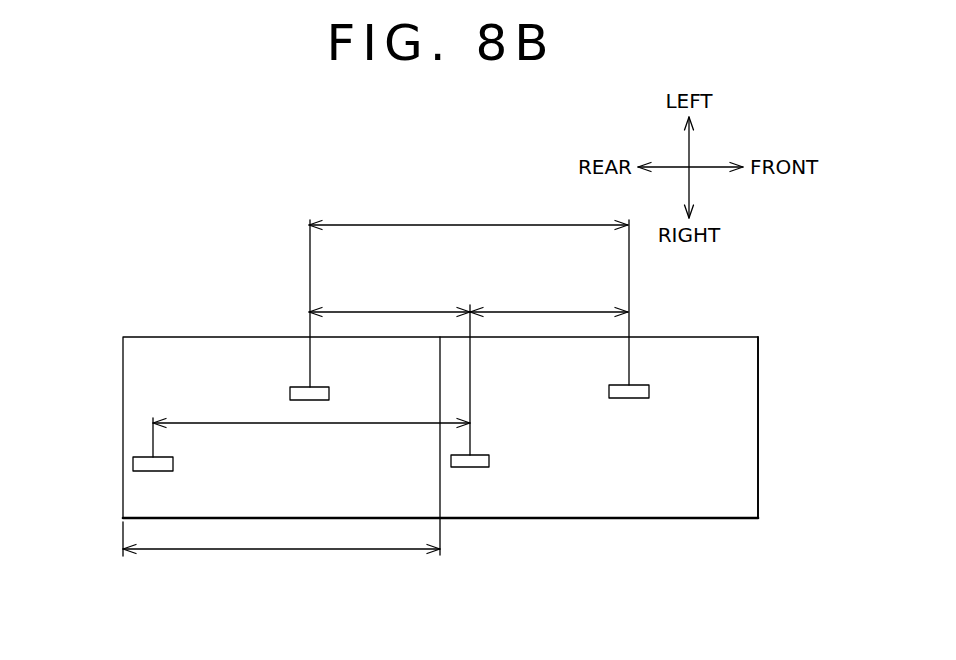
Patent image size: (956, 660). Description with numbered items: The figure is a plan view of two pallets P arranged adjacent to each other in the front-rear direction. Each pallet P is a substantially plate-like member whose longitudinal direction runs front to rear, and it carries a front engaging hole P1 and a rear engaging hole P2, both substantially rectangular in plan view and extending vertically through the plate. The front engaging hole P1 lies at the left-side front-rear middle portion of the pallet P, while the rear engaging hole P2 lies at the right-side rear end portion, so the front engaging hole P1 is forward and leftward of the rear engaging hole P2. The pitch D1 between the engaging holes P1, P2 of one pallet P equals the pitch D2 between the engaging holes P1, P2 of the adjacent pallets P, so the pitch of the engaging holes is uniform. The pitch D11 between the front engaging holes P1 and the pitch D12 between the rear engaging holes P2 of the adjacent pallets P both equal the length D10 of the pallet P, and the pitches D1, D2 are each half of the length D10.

The pallet P is at (155, 337).
The front engaging hole P1 is at (303, 388).
The rear engaging hole P2 is at (140, 465).
The pitch between front engaging holes D11 is at (470, 222).
The pitch between engaging holes of adjacent pallets D2 is at (390, 311).
The pitch between engaging holes of one pallet D1 is at (545, 311).
The pitch between rear engaging holes D12 is at (250, 422).
The length of the pallet D10 is at (247, 553).